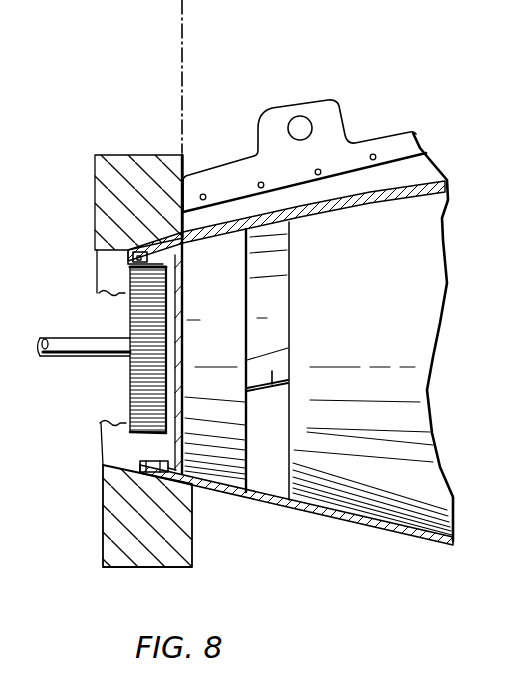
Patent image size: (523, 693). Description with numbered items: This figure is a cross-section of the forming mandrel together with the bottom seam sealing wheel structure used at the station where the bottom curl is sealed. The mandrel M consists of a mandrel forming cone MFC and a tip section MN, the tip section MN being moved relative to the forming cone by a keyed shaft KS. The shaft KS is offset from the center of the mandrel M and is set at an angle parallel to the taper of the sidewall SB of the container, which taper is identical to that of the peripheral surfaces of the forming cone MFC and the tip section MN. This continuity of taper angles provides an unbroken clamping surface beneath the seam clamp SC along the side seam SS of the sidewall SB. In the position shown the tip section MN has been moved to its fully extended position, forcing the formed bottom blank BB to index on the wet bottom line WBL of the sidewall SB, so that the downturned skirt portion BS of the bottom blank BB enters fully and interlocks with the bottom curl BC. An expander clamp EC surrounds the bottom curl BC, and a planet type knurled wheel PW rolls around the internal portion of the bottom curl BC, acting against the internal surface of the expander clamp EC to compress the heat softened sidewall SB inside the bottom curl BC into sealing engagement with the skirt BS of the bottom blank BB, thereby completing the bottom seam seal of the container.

The wet bottom line WBL is at (183, 82).
The expander clamp EC is at (146, 197).
The seam clamp SC is at (333, 134).
The side seam SS is at (413, 181).
The bottom curl BC is at (128, 258).
The bottom blank BB is at (183, 322).
The planet type knurled wheel PW is at (140, 398).
The mandrel forming cone MFC is at (383, 296).
The mandrel M is at (424, 308).
The keyed shaft KS is at (272, 384).
The downturned skirt portion BS is at (160, 459).
The tip section MN is at (225, 457).
The sidewall SB is at (375, 523).